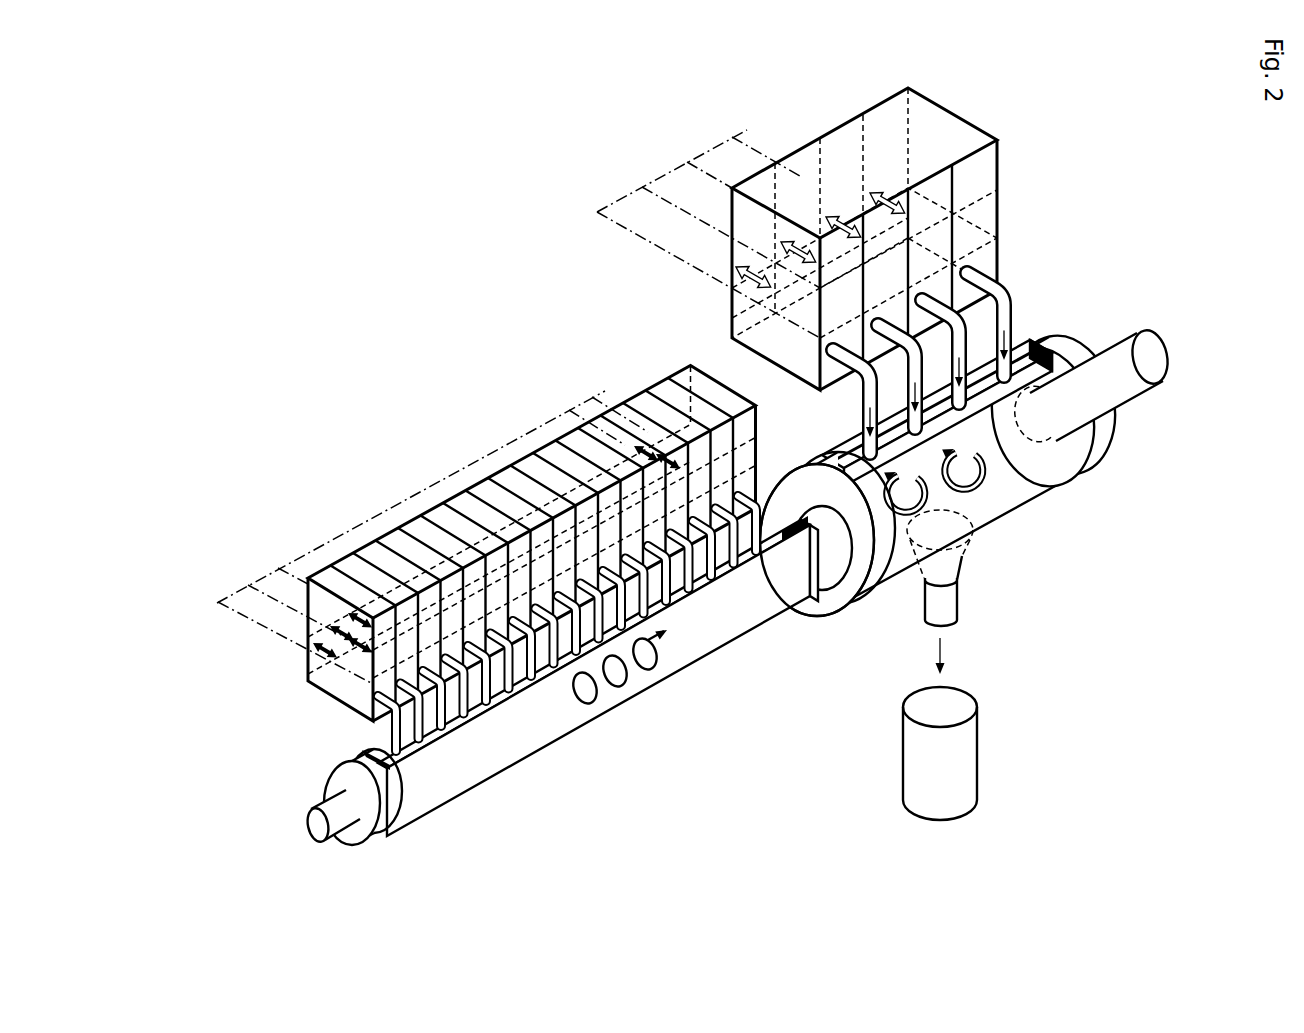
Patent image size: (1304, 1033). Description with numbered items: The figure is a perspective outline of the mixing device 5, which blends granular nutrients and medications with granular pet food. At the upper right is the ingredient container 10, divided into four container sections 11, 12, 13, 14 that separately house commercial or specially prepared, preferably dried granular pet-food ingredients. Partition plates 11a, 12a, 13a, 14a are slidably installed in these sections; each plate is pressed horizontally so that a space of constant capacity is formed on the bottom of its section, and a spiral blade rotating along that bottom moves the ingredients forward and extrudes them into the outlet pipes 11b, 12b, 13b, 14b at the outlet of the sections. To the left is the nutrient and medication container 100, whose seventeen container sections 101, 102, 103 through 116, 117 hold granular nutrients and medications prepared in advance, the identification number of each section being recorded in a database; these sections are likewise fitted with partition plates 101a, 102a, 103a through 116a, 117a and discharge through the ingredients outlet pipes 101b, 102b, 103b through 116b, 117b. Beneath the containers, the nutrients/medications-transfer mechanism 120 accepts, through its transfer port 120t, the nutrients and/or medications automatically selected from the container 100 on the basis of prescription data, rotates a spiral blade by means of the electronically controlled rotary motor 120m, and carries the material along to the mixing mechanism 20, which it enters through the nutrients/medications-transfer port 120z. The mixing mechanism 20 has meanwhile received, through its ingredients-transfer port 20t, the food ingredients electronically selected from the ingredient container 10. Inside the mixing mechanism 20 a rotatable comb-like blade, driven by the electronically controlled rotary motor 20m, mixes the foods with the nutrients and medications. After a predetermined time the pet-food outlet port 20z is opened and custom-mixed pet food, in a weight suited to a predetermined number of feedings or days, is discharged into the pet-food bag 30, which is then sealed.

The mixing device 5 is at (1100, 193).
The ingredient container 10 is at (980, 121).
The container section 11 is at (766, 182).
The container section 12 is at (810, 165).
The container section 13 is at (857, 137).
The container section 14 is at (895, 108).
The partition plate 11a is at (626, 208).
The partition plate 12a is at (668, 183).
The partition plate 13a is at (712, 160).
The partition plate 14a is at (753, 138).
The outlet pipe 11b is at (858, 397).
The outlet pipe 12b is at (900, 400).
The outlet pipe 13b is at (1003, 318).
The outlet pipe 14b is at (1002, 282).
The mixing mechanism 20 is at (1056, 503).
The ingredients-transfer port 20t is at (1048, 336).
The electronically controlled rotary motor 20m is at (1128, 398).
The pet-food outlet port 20z is at (960, 614).
The pet-food bag 30 is at (968, 742).
The nutrient and medication container 100 is at (458, 435).
The container section 101 is at (338, 582).
The container section 102 is at (360, 567).
The container section 103 is at (387, 557).
The container section 116 is at (662, 385).
The container section 117 is at (695, 383).
The partition plate 101a is at (238, 603).
The partition plate 102a is at (260, 587).
The partition plate 103a is at (280, 567).
The partition plate 116a is at (550, 421).
The partition plate 117a is at (600, 398).
The ingredients outlet pipe 101b is at (390, 725).
The ingredients outlet pipe 102b is at (437, 757).
The ingredients outlet pipe 103b is at (470, 735).
The ingredients outlet pipe 116b is at (740, 565).
The ingredients outlet pipe 117b is at (757, 497).
The nutrients/medications-transfer mechanism 120 is at (650, 684).
The nutrients/medications-transfer port 120t is at (357, 762).
The electronically controlled rotary motor 120m is at (345, 818).
The nutrients/medications-transfer port 120z is at (814, 577).